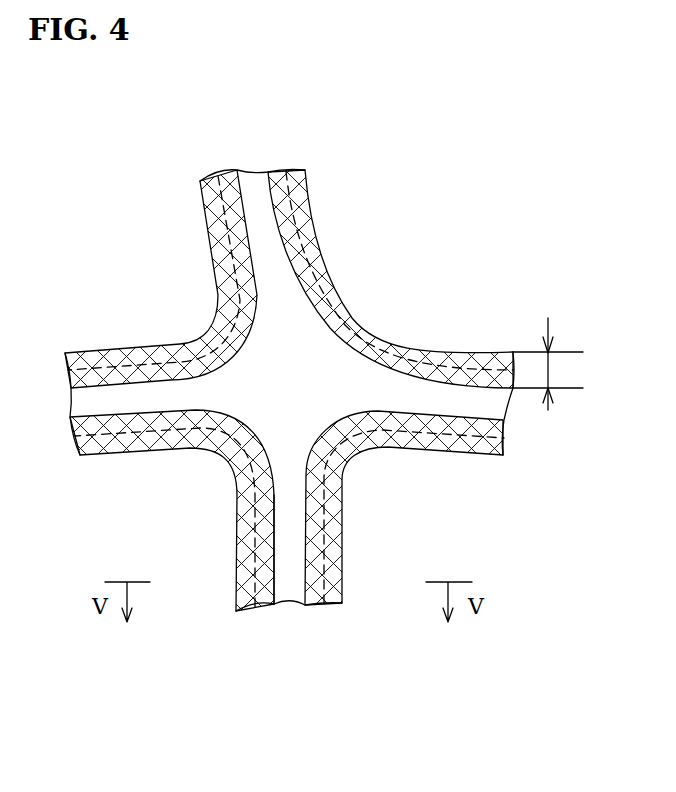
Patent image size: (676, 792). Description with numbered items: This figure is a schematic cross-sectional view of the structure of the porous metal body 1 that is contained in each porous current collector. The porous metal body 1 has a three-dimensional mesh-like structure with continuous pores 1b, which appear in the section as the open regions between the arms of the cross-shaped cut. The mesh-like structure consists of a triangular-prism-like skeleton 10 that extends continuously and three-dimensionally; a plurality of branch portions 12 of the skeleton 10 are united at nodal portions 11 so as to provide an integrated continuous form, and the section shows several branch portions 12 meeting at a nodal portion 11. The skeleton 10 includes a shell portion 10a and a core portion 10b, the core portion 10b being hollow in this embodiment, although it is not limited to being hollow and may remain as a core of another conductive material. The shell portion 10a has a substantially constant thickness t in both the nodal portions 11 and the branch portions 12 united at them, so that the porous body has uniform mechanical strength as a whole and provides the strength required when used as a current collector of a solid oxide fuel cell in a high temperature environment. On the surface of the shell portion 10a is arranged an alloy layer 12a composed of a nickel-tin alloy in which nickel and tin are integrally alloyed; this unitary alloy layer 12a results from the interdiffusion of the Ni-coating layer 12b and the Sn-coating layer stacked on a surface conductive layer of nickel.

The porous metal body 1 is at (274, 420).
The continuous pores 1b is at (152, 267).
The skeleton 10 is at (274, 468).
The shell portion 10a is at (174, 566).
The core portion 10b is at (288, 580).
The nodal portions 11 is at (218, 458).
The branch portions 12 is at (274, 446).
The alloy layer 12a is at (250, 607).
The Ni-coating layer 12b is at (268, 603).
The thickness t is at (553, 364).